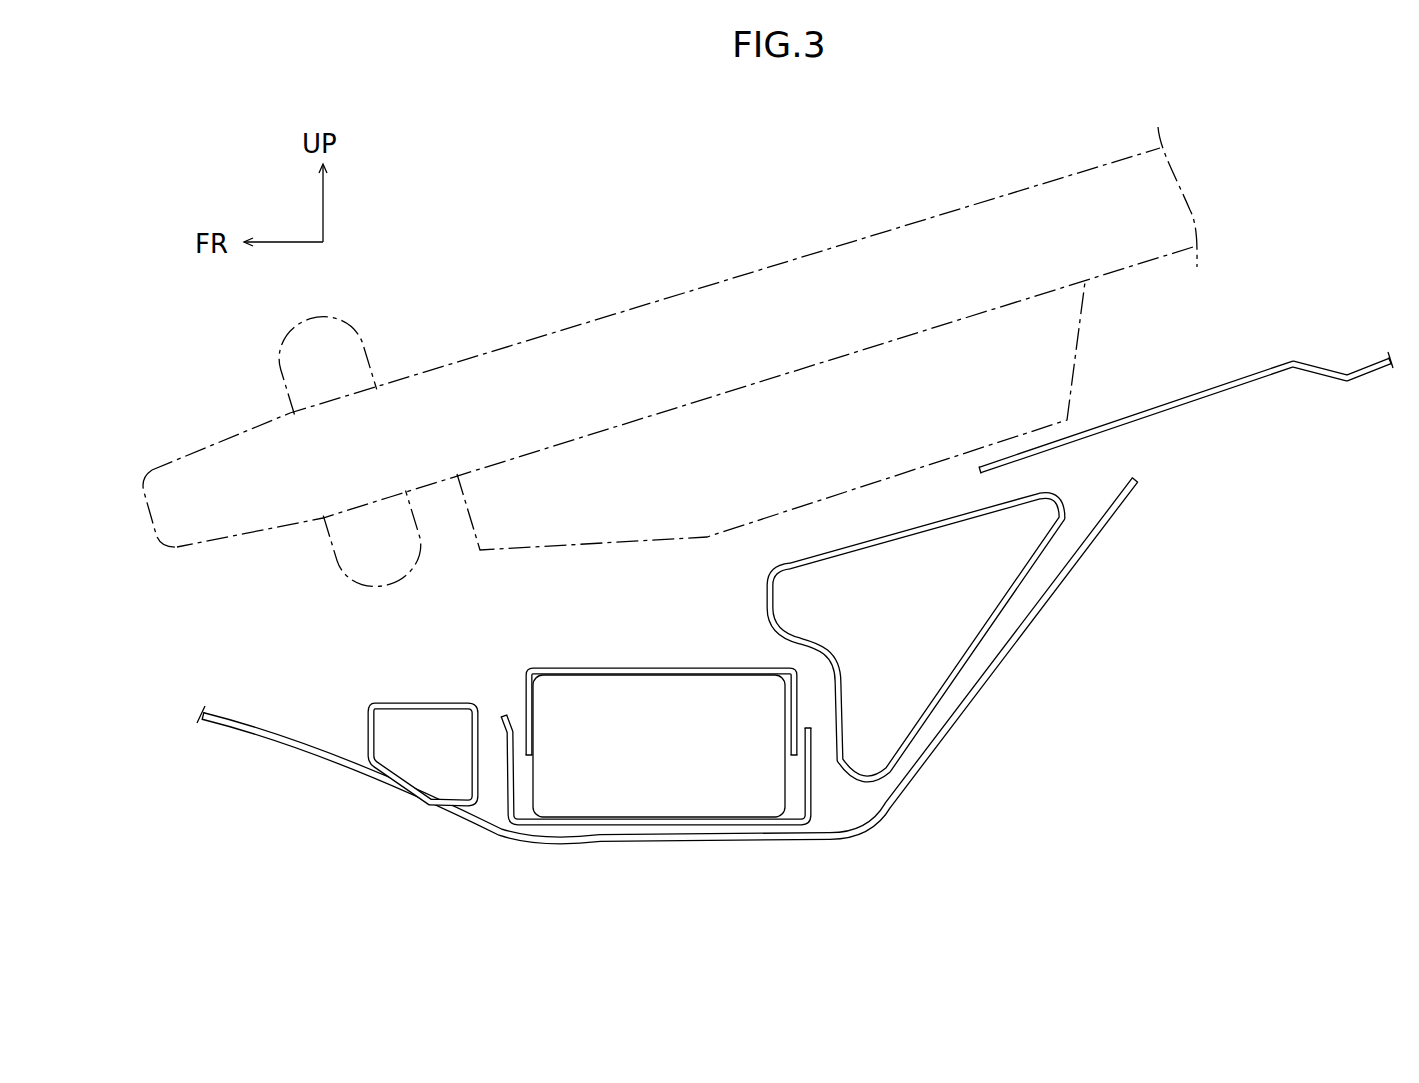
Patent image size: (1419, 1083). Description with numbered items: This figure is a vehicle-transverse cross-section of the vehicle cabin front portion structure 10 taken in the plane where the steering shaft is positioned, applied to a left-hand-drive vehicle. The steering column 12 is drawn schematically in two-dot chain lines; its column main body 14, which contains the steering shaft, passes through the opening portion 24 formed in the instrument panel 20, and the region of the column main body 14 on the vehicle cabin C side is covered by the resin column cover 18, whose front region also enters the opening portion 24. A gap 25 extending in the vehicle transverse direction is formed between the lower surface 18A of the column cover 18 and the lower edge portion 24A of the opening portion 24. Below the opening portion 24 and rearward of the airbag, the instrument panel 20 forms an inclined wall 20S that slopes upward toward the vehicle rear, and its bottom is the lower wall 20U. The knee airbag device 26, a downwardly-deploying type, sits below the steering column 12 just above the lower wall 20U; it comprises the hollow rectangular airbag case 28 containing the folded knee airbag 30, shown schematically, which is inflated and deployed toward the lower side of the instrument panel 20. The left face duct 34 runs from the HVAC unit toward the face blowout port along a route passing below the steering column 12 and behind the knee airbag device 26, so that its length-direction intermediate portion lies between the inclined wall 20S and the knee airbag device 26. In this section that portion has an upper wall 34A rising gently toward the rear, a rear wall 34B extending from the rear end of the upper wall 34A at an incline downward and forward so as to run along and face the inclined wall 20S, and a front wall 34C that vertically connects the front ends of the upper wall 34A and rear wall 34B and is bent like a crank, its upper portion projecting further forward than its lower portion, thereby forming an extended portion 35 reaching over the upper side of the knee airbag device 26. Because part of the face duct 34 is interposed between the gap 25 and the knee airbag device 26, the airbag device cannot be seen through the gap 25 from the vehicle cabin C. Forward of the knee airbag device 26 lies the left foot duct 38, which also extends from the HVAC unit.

The vehicle cabin front portion structure 10 is at (745, 669).
The steering column 12 is at (670, 362).
The column main body 14 is at (640, 307).
The column cover 18 is at (1186, 415).
The lower surface 18A is at (1186, 415).
The instrument panel 20 is at (745, 699).
The inclined wall 20S is at (745, 699).
The lower wall 20U is at (745, 699).
The opening portion 24 is at (745, 656).
The lower edge portion 24A is at (1138, 476).
The gap 25 is at (1120, 452).
The knee airbag device 26 is at (656, 744).
The airbag case 28 is at (682, 666).
The knee airbag 30 is at (587, 797).
The left face duct 34 is at (897, 596).
The upper wall 34A is at (897, 596).
The rear wall 34B is at (897, 631).
The front wall 34C is at (897, 631).
The extended portion 35 is at (788, 560).
The left foot duct 38 is at (417, 700).
The vehicle cabin C is at (1274, 666).